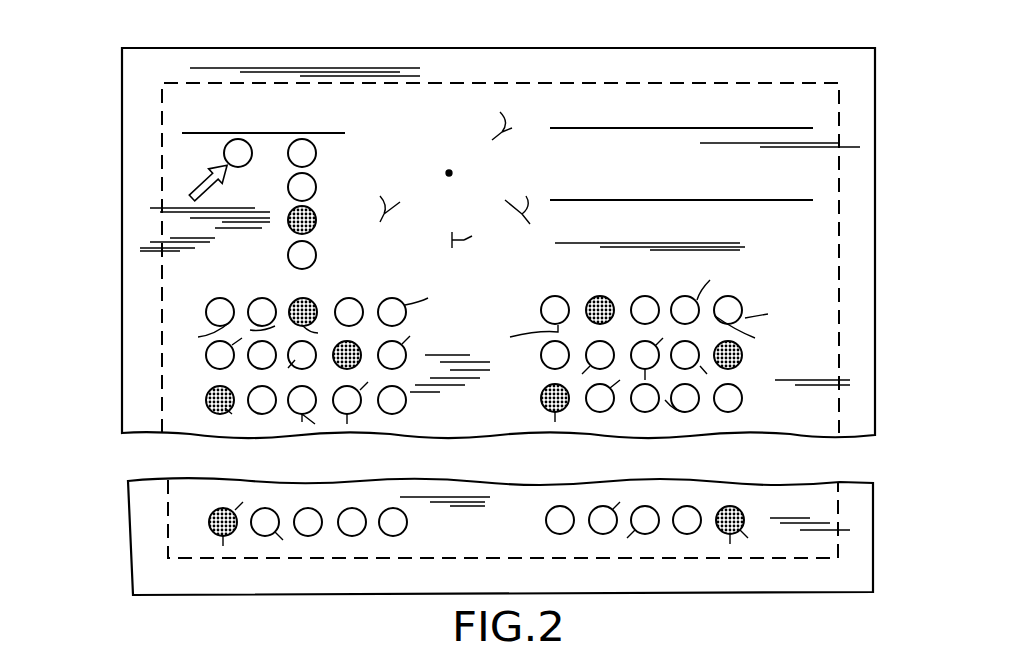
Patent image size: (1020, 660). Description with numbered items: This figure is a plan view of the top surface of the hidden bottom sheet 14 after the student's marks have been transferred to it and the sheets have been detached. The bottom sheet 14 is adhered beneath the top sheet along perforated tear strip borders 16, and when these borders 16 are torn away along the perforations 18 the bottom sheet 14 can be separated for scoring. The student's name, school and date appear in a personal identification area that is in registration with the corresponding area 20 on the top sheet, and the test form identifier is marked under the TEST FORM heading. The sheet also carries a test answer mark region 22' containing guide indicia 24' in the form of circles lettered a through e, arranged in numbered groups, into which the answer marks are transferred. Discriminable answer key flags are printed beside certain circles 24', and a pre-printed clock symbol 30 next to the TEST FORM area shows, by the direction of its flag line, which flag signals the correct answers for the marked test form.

The bottom sheet 14 is at (122, 237).
The perforated tear strip borders 16 is at (585, 43).
The perforations 18 is at (590, 80).
The personal identification area 20 is at (657, 135).
The test answer mark region 22' is at (420, 484).
The guide indicia 24' is at (301, 438).
The clock symbol 30 is at (459, 150).